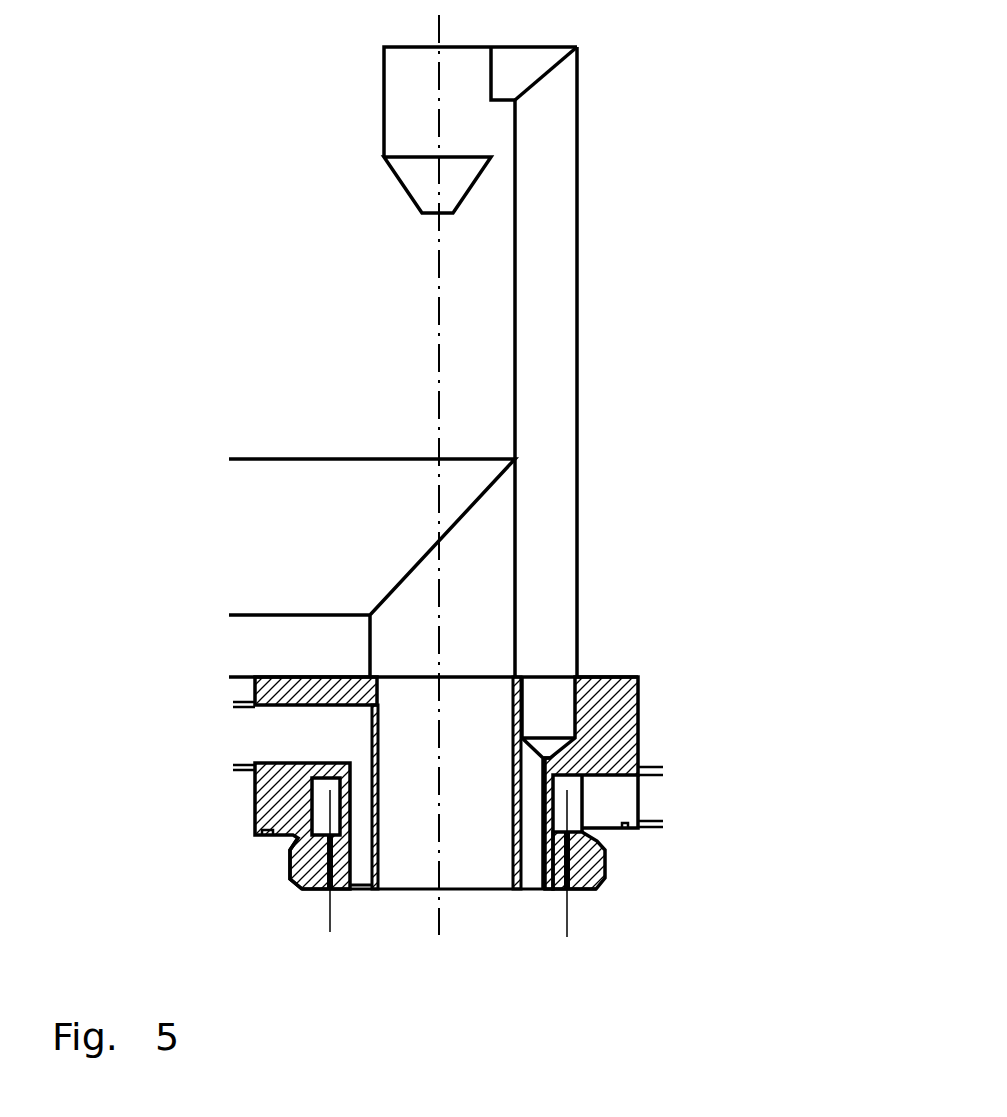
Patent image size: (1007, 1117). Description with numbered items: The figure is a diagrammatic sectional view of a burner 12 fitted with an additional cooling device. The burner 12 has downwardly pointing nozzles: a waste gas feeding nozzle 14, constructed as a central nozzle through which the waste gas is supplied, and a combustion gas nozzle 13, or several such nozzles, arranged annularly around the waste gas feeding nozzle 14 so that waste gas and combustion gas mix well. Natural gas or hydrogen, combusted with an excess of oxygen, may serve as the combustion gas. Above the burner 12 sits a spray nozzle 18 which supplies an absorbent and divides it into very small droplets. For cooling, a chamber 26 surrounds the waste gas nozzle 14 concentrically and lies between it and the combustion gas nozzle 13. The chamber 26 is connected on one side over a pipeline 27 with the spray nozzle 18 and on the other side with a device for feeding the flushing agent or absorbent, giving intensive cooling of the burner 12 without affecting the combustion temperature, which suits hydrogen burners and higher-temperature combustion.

The burner 12 is at (612, 752).
The combustion gas nozzle 13 is at (568, 889).
The waste gas feeding nozzle 14 is at (483, 698).
The spray nozzle 18 is at (437, 135).
The chamber 26 is at (607, 852).
The pipeline 27 is at (557, 507).